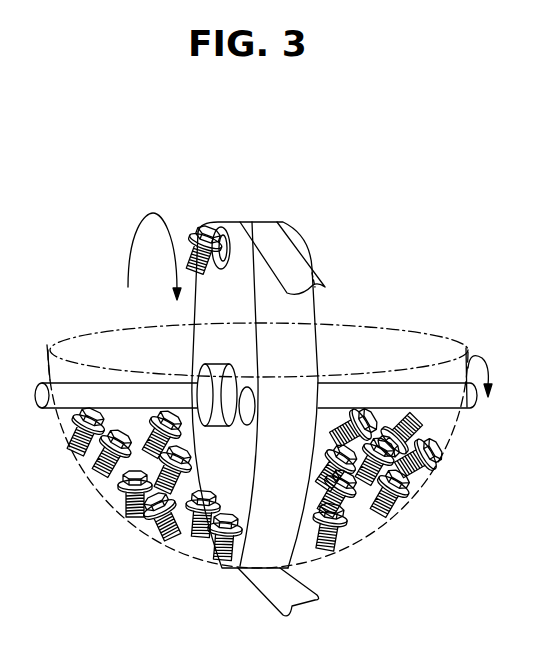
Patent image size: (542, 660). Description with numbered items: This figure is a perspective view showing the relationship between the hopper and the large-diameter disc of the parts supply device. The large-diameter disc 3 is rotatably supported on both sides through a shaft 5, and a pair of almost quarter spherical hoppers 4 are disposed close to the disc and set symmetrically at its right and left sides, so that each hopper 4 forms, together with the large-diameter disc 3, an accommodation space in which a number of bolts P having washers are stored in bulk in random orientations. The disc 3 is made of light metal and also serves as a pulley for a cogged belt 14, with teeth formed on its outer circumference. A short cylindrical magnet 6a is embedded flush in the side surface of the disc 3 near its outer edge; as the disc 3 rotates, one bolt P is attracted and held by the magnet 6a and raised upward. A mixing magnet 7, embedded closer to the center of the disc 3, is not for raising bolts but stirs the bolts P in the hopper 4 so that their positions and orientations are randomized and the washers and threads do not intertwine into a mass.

The large-diameter disc 3 is at (322, 308).
The hopper 4 is at (110, 510).
The shaft 5 is at (52, 399).
The magnet 6a is at (243, 225).
The mixing magnet 7 is at (255, 400).
The cogged belt 14 is at (282, 253).
The bolt P is at (195, 232).